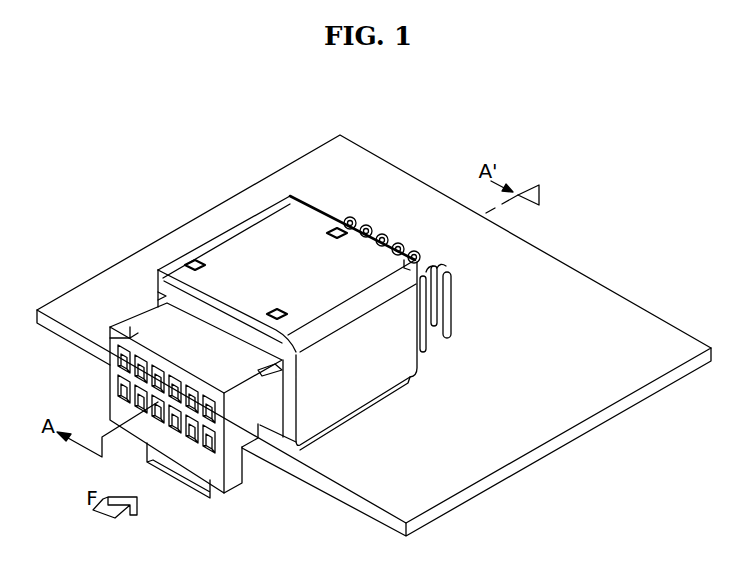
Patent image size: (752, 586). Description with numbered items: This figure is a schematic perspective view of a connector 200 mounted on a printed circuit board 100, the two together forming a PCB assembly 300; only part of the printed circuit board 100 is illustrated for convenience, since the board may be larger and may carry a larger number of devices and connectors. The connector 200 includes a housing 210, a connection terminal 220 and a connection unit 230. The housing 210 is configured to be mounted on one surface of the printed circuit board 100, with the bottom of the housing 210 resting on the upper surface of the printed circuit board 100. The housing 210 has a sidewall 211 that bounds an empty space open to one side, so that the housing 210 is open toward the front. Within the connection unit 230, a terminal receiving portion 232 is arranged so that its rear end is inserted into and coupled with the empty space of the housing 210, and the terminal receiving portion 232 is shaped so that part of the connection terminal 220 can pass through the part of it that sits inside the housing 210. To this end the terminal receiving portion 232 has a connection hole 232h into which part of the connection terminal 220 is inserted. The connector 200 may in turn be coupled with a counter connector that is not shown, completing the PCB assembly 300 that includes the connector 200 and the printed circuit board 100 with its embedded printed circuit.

The printed circuit board 100 is at (278, 167).
The connector 200 is at (298, 312).
The housing 210 is at (231, 224).
The sidewall 211 is at (192, 245).
The connection terminal 220 is at (397, 242).
The connection unit 230 is at (156, 368).
The terminal receiving portion 232 is at (116, 357).
The connection hole 232h is at (120, 385).
The PCB assembly 300 is at (80, 116).